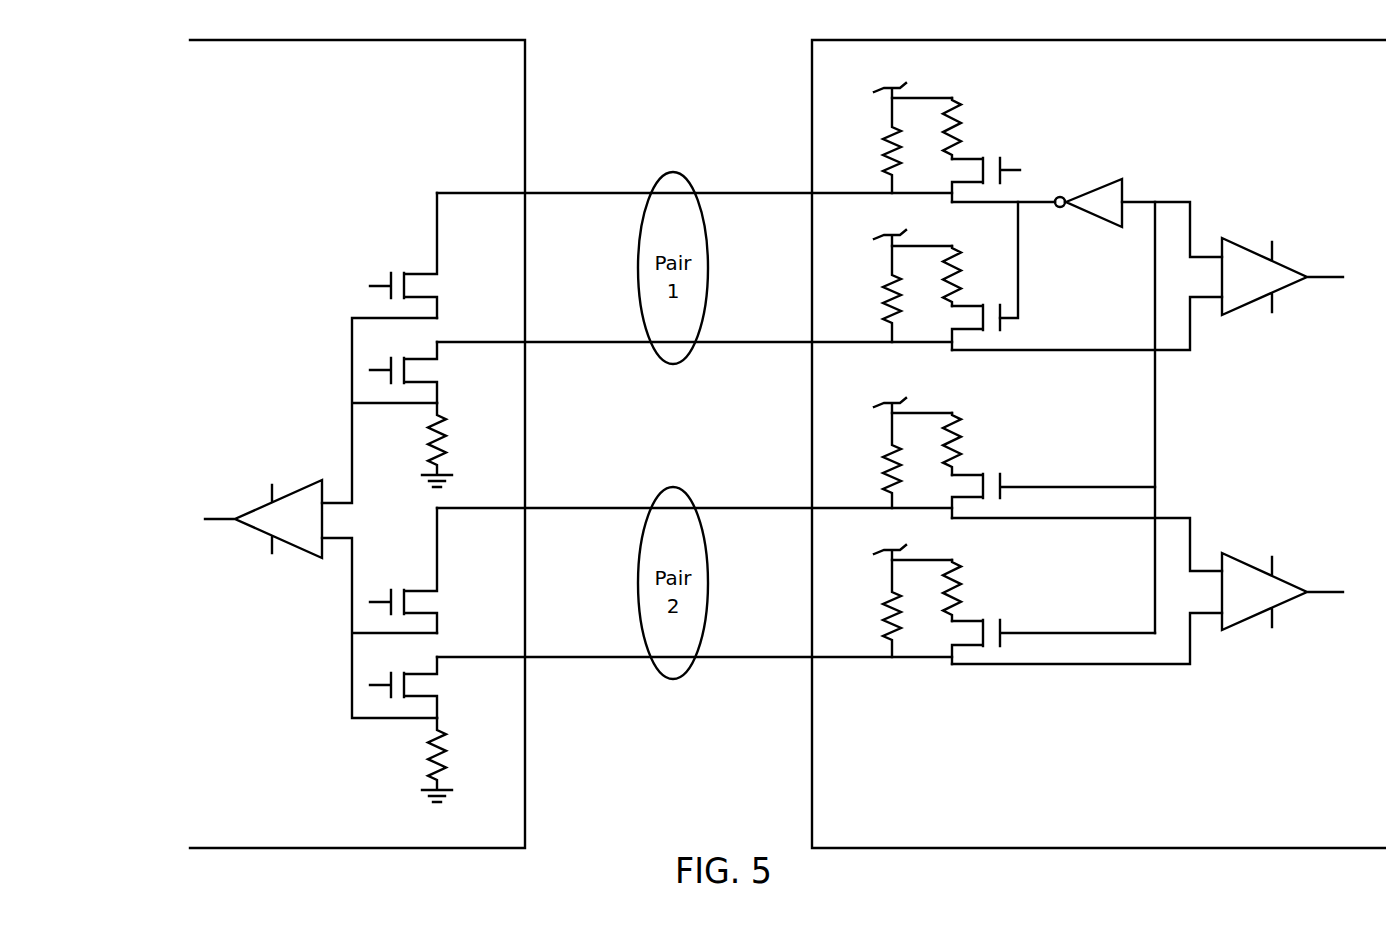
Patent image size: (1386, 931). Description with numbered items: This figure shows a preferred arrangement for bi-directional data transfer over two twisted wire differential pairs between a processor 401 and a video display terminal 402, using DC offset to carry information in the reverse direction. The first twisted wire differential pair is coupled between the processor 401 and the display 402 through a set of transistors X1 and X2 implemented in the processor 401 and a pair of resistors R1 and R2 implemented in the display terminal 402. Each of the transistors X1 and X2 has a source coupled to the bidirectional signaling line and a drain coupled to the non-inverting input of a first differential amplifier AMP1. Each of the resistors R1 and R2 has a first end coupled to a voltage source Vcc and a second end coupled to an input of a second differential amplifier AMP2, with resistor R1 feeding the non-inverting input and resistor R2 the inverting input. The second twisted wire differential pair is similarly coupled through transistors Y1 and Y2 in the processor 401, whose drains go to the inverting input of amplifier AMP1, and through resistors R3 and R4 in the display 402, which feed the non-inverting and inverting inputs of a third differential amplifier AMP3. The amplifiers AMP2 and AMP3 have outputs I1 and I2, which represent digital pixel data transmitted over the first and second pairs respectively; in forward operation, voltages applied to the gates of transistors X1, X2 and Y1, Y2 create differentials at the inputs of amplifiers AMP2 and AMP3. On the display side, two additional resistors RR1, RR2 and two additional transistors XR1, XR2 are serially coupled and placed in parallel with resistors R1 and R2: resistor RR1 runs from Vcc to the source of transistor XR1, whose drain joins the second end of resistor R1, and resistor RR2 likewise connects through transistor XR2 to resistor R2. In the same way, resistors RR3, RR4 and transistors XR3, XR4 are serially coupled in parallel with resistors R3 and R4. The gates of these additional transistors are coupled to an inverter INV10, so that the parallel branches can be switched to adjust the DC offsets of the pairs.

The processor 401 is at (363, 828).
The video display terminal 402 is at (1137, 828).
The transistor X1 is at (423, 255).
The transistor X2 is at (423, 372).
The transistor Y1 is at (422, 570).
The transistor Y2 is at (422, 687).
The first differential amplifier AMP1 is at (263, 532).
The second differential amplifier AMP2 is at (1282, 293).
The third differential amplifier AMP3 is at (1282, 606).
The resistor R1 is at (875, 145).
The resistor R2 is at (875, 294).
The resistor R3 is at (875, 460).
The resistor R4 is at (875, 608).
The additional resistor RR1 is at (976, 128).
The additional resistor RR2 is at (976, 276).
The additional resistor RR3 is at (976, 444).
The additional resistor RR4 is at (976, 590).
The additional transistor XR1 is at (964, 180).
The additional transistor XR2 is at (954, 327).
The additional transistor XR3 is at (1031, 496).
The additional transistor XR4 is at (1031, 642).
The inverter INV10 is at (1088, 190).
The output I1 is at (1327, 258).
The output I2 is at (1327, 575).